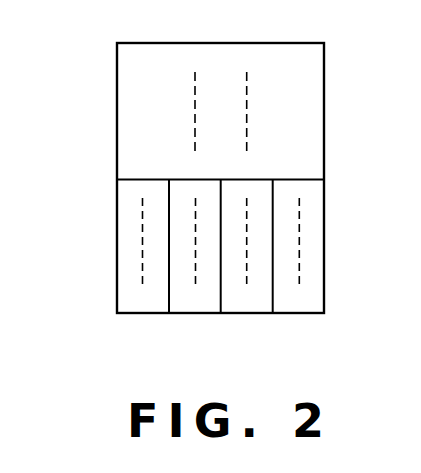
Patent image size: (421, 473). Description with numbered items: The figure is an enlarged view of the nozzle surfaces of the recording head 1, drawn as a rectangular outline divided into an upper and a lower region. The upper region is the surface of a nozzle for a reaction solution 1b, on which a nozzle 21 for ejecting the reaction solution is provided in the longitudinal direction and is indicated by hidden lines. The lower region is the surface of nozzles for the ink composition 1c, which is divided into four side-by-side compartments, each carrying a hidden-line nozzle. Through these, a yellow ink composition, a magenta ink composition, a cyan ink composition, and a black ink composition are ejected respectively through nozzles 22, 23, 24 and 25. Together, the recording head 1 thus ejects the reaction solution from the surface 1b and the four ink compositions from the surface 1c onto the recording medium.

The recording head 1 is at (325, 203).
The surface of a nozzle for a reaction solution 1b is at (138, 121).
The surface of nozzles for the ink composition 1c is at (137, 248).
The nozzle for ejecting the reaction solution 21 is at (197, 87).
The nozzle for yellow ink composition 22 is at (143, 264).
The nozzle for magenta ink composition 23 is at (197, 266).
The nozzle for cyan ink composition 24 is at (248, 265).
The nozzle for black ink composition 25 is at (302, 265).